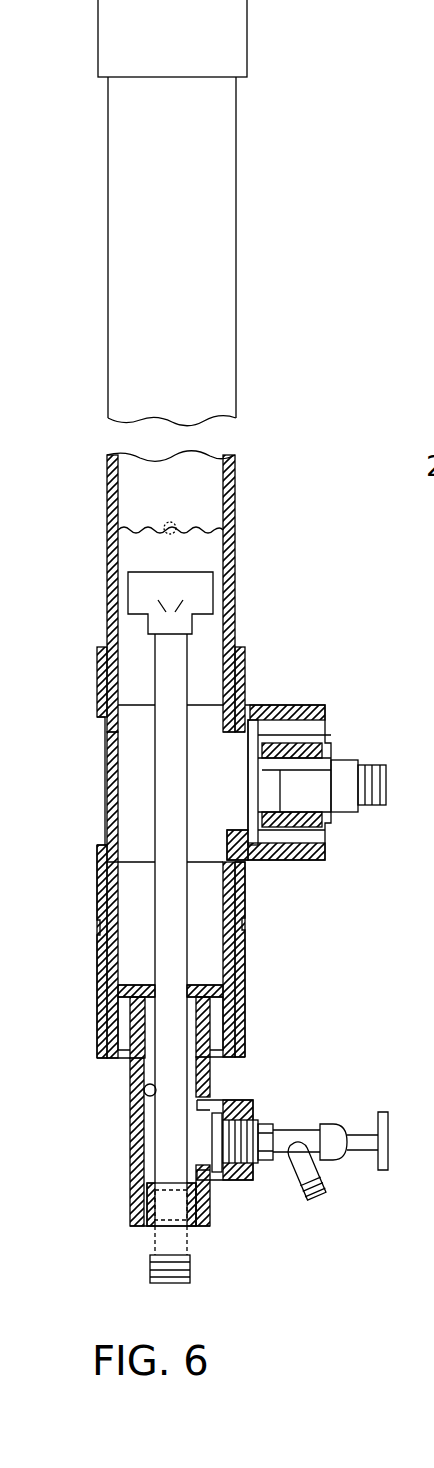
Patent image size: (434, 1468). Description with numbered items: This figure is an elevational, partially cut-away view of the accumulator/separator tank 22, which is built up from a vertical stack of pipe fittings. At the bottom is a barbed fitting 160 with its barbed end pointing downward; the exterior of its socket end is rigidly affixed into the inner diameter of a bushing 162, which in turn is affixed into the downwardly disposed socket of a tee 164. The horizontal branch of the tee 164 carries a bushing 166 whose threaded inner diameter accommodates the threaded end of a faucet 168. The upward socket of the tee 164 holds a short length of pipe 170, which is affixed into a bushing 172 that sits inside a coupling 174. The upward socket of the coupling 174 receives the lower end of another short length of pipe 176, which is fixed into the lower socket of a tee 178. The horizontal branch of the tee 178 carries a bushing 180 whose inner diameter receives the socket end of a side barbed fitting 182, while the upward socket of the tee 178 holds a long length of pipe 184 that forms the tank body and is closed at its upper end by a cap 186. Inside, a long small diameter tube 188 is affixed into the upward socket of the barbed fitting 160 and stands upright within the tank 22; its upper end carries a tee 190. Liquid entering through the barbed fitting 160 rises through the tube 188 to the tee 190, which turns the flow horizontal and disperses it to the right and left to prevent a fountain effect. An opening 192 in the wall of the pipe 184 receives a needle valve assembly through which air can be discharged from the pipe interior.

The tank 22 is at (259, 107).
The barbed fitting 160 is at (160, 1283).
The bushing 162 is at (142, 1226).
The tee 164 is at (130, 1162).
The bushing 166 is at (256, 1107).
The faucet 168 is at (340, 1115).
The short length of pipe 170 is at (143, 1092).
The bushing 172 is at (106, 1055).
The coupling 174 is at (104, 992).
The short length of pipe 176 is at (112, 888).
The tee 178 is at (112, 798).
The bushing 180 is at (325, 722).
The barbed fitting 182 is at (386, 778).
The long length of pipe 184 is at (229, 598).
The cap 186 is at (247, 24).
The small diameter tube 188 is at (176, 880).
The tee 190 is at (180, 572).
The opening 192 is at (170, 524).